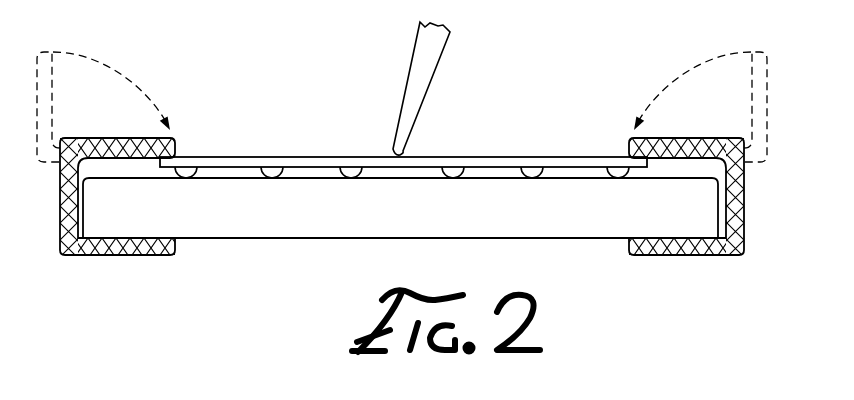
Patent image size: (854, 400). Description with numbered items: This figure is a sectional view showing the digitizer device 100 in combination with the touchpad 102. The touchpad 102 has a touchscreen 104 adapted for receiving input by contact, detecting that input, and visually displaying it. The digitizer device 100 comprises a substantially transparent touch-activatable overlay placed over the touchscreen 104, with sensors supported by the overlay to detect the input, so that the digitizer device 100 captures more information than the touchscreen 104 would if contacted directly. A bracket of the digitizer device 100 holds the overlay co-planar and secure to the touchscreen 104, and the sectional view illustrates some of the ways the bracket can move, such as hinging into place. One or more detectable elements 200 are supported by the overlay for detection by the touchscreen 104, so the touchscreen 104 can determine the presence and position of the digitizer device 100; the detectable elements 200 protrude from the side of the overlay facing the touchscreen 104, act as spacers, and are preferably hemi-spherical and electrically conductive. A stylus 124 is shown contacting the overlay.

The digitizer device 100 is at (497, 156).
The touchpad 102 is at (408, 239).
The touchscreen 104 is at (301, 195).
The stylus 124 is at (417, 71).
The detectable elements 200 is at (458, 173).